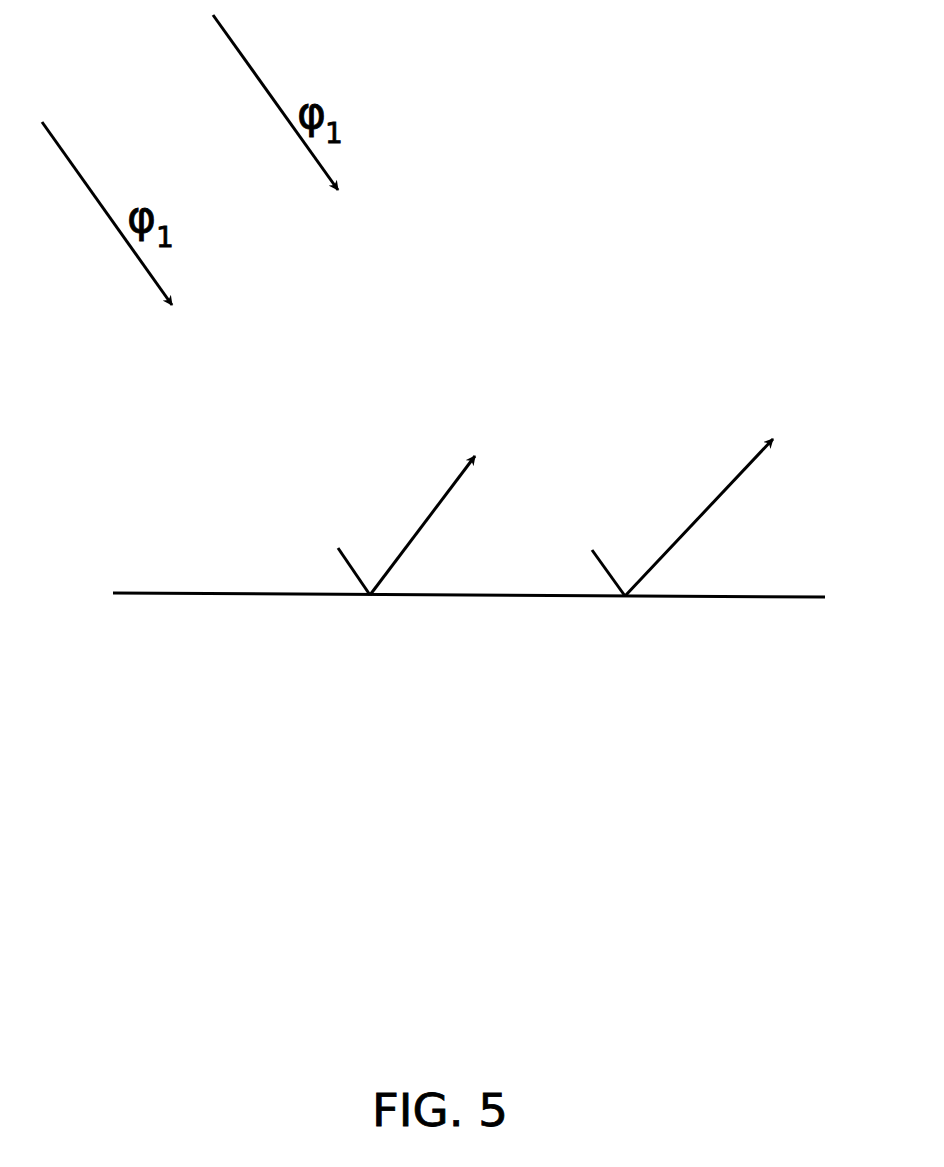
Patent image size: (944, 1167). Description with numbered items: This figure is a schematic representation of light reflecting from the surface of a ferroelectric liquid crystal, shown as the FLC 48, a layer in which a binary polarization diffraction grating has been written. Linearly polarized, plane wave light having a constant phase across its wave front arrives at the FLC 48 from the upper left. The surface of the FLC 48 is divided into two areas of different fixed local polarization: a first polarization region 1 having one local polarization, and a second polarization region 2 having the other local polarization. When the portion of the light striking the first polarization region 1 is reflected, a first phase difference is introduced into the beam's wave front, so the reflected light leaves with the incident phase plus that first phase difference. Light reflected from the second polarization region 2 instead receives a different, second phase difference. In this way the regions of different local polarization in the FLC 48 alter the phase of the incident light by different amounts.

The ferroelectric liquid crystal 48 is at (442, 596).
The region of local polarization P1 1 is at (399, 558).
The region of local polarization P2 2 is at (722, 584).